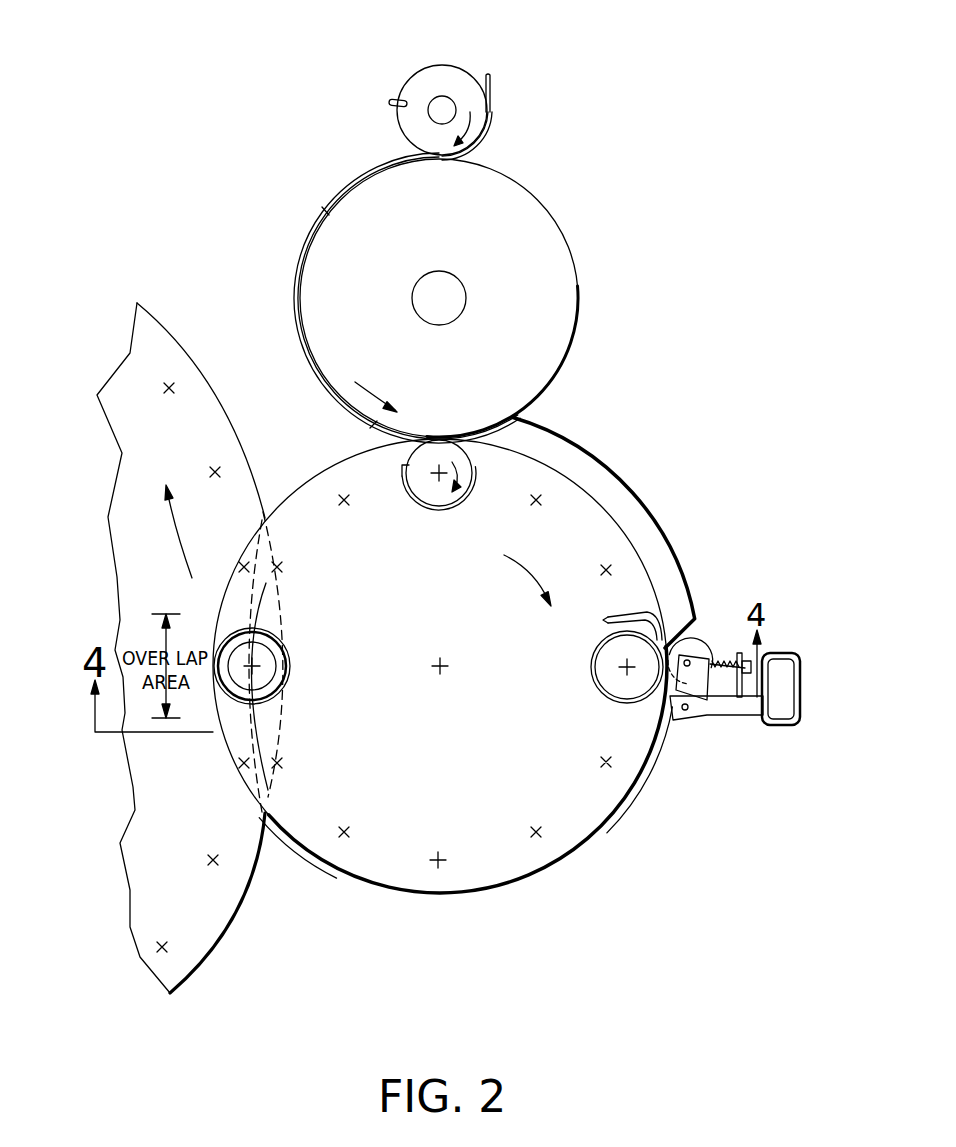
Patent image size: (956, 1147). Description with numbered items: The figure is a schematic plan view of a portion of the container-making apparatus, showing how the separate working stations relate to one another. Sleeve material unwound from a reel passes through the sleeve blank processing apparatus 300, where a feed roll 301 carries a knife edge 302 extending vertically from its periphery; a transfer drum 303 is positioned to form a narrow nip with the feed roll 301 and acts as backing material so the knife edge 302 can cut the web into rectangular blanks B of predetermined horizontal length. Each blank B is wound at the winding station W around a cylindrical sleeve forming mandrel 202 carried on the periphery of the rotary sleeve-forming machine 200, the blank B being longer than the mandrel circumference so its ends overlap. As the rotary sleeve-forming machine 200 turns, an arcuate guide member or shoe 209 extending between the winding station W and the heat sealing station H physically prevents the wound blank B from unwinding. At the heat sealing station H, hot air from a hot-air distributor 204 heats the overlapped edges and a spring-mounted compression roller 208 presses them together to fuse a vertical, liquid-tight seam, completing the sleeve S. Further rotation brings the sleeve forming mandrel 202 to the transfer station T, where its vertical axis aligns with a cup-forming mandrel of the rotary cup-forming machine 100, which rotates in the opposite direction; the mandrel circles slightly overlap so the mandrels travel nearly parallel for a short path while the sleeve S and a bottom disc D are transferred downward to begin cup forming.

The rotary cup-forming machine 100 is at (218, 365).
The rotary sleeve-forming machine 200 is at (636, 456).
The sleeve forming mandrel 202 is at (430, 492).
The hot-air distributor 204 is at (656, 617).
The spring-mounted compression roller 208 is at (718, 652).
The arcuate guide member or shoe 209 is at (645, 510).
The sleeve blank processing apparatus 300 is at (548, 152).
The feed roll 301 is at (433, 66).
The knife edge 302 is at (392, 106).
The transfer drum 303 is at (568, 243).
The winding station W is at (392, 492).
The blank B is at (477, 493).
The heat sealing station H is at (706, 624).
The transfer station T is at (280, 622).
The sleeve S is at (280, 700).
The bottom disc D is at (258, 690).